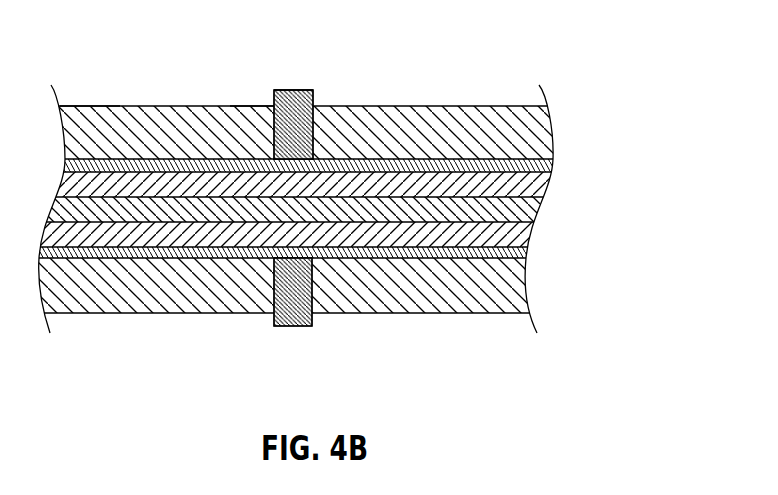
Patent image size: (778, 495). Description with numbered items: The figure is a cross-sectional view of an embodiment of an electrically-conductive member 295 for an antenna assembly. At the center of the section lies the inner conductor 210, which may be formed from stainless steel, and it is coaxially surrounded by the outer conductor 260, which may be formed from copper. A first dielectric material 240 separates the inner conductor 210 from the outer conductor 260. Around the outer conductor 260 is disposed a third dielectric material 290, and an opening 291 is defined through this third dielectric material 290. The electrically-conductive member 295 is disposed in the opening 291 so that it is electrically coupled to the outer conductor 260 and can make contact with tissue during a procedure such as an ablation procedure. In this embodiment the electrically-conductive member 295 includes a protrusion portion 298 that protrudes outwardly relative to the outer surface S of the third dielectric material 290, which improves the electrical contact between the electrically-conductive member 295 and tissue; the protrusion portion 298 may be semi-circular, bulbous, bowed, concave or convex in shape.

The inner conductor 210 is at (520, 212).
The first dielectric material 240 is at (540, 188).
The outer conductor 260 is at (545, 167).
The third dielectric material 290 is at (542, 133).
The opening 291 is at (322, 134).
The electrically-conductive member 295 is at (266, 102).
The protrusion portion 298 is at (294, 85).
The outer surface S is at (81, 100).